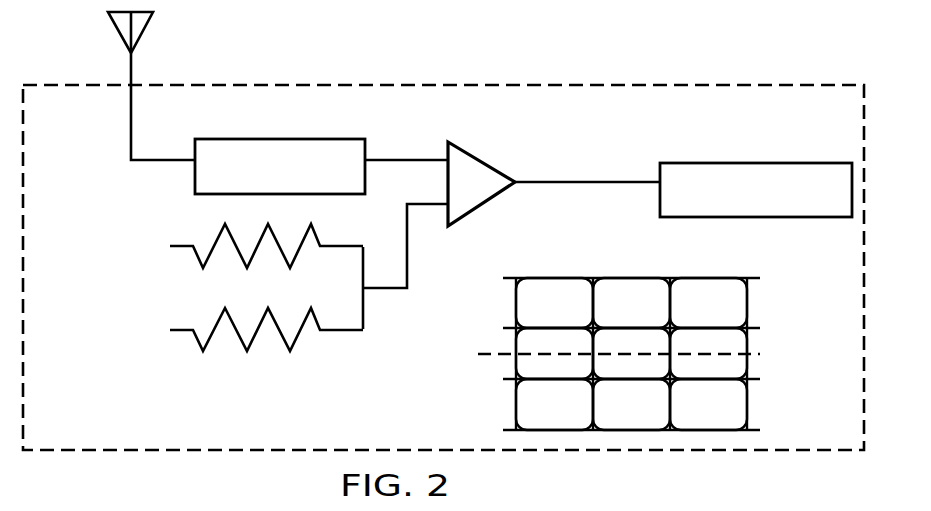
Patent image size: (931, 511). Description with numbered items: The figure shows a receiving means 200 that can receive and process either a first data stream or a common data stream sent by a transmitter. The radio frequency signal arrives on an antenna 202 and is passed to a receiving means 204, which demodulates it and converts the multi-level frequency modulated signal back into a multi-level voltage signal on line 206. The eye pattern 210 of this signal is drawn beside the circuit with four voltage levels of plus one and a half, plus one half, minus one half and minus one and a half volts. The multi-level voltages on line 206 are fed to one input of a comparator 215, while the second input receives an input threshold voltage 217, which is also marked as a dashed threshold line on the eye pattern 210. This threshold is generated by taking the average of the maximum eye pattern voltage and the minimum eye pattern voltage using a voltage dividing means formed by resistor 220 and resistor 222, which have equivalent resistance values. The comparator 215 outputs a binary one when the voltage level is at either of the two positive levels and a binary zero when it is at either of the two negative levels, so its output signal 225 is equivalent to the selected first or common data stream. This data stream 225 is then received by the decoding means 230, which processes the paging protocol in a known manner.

The receiving means 200 is at (452, 74).
The antenna 202 is at (141, 28).
The receiving means 204 is at (232, 139).
The line 206 is at (385, 160).
The comparator 215 is at (462, 142).
The input threshold voltage 217 is at (366, 320).
The resistor 220 is at (223, 226).
The resistor 222 is at (290, 355).
The signal 225 is at (548, 183).
The decoding means 230 is at (720, 163).
The eye pattern 210 is at (625, 278).